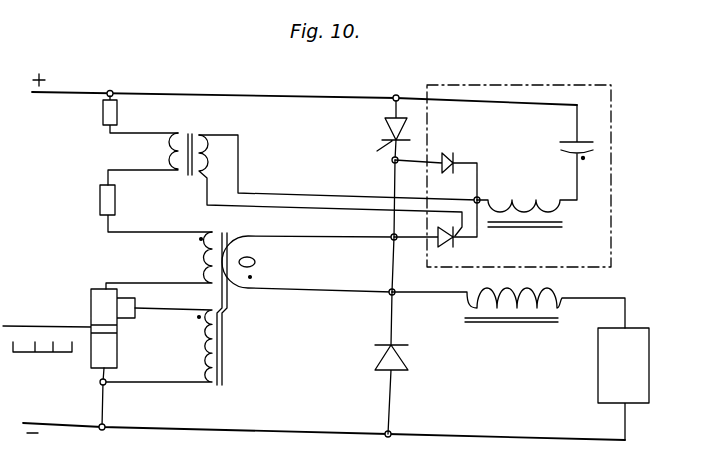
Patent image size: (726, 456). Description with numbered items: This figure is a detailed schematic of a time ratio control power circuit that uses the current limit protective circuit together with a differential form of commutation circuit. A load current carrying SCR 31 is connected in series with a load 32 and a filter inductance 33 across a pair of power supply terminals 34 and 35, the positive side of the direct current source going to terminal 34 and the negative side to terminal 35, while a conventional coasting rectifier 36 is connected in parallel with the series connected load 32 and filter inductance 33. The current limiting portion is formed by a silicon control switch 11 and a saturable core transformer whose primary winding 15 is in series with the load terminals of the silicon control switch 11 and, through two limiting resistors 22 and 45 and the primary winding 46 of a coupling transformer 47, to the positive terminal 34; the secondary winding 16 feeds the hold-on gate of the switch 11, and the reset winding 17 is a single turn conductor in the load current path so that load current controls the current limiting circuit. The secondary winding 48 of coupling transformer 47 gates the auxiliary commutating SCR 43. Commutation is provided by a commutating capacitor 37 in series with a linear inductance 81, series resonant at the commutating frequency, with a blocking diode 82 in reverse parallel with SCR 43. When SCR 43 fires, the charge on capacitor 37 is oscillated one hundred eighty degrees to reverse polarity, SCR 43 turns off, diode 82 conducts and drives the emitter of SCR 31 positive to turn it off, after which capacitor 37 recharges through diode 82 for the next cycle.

The power supply terminal 34 is at (73, 91).
The power supply terminal 35 is at (178, 429).
The limiting resistor 45 is at (103, 114).
The primary winding 46 is at (169, 151).
The coupling transformer 47 is at (192, 204).
The secondary winding 48 is at (205, 160).
The limiting resistor 22 is at (115, 203).
The primary winding 15 is at (197, 256).
The secondary winding 16 is at (197, 361).
The reset winding 17 is at (258, 259).
The silicon control switch 11 is at (88, 363).
The load current carrying SCR 31 is at (383, 127).
The blocking diode 82 is at (449, 158).
The commutating capacitor 37 is at (573, 140).
The linear inductance 81 is at (526, 196).
The auxiliary commutating SCR 43 is at (458, 244).
The coasting rectifier 36 is at (400, 356).
The filter inductance 33 is at (548, 293).
The load 32 is at (649, 359).